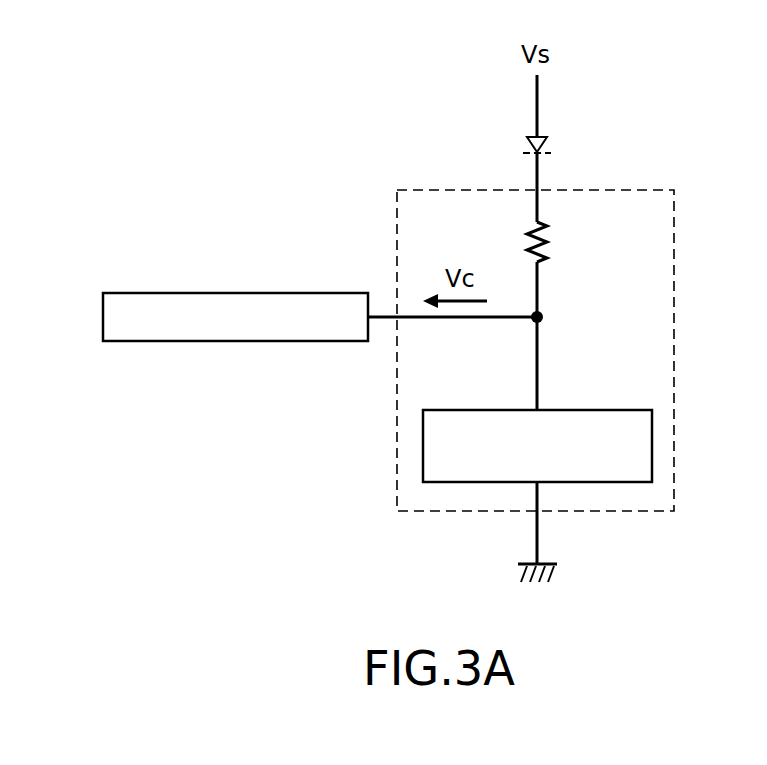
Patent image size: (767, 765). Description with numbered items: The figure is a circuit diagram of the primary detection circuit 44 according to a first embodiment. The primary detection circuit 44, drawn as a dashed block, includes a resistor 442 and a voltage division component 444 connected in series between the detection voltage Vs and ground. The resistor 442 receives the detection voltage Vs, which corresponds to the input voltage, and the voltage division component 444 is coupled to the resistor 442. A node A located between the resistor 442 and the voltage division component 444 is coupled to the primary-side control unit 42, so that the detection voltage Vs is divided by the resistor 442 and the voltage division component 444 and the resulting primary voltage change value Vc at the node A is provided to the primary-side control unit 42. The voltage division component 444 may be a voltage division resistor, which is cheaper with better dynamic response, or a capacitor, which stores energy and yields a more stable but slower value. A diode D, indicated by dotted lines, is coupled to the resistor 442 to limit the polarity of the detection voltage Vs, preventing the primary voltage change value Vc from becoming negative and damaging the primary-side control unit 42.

The primary-side control unit 42 is at (173, 300).
The primary detection circuit 44 is at (645, 207).
The resistor 442 is at (552, 243).
The voltage division component 444 is at (468, 418).
The diode D is at (527, 149).
The node A is at (545, 313).